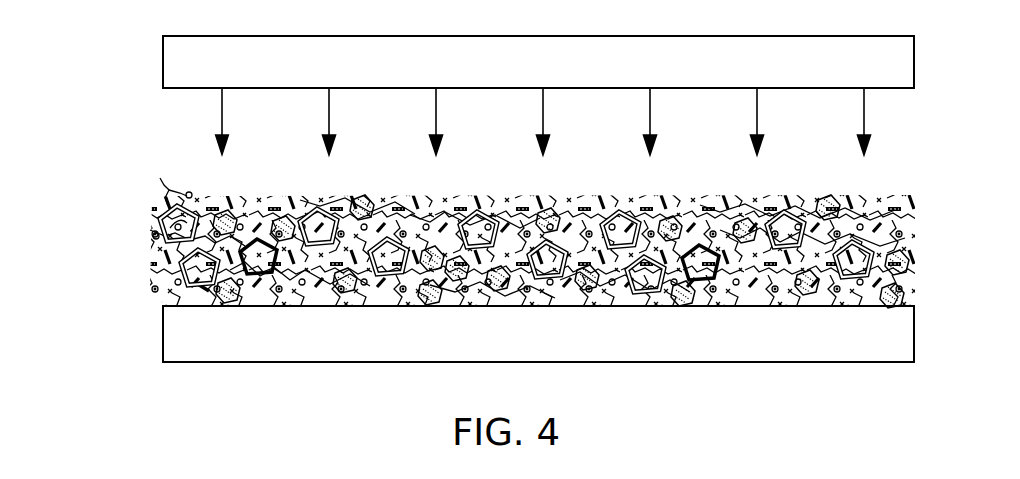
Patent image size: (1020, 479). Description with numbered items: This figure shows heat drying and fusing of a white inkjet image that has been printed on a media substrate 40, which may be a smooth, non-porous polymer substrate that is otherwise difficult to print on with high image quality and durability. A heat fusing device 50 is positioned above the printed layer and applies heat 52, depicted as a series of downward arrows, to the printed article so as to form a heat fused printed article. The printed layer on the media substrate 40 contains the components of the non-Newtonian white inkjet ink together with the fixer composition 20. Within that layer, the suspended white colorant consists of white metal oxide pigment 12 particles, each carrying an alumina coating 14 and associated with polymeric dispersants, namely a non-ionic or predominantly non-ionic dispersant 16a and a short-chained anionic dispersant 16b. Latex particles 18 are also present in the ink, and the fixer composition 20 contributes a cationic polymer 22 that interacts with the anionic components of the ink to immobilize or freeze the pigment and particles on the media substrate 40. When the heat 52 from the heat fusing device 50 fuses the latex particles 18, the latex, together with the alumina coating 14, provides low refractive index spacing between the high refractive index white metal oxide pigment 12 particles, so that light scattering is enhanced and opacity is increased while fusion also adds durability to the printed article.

The white metal oxide pigment 12 is at (176, 222).
The alumina coating 14 is at (160, 208).
The non-ionic polymeric dispersant 16a is at (160, 178).
The short-chained anionic dispersant 16b is at (153, 238).
The latex particles 18 is at (203, 288).
The fixer composition 20 is at (597, 121).
The cationic polymer 22 is at (170, 293).
The media substrate 40 is at (553, 346).
The heat fusing device 50 is at (523, 74).
The heat 52 is at (222, 108).